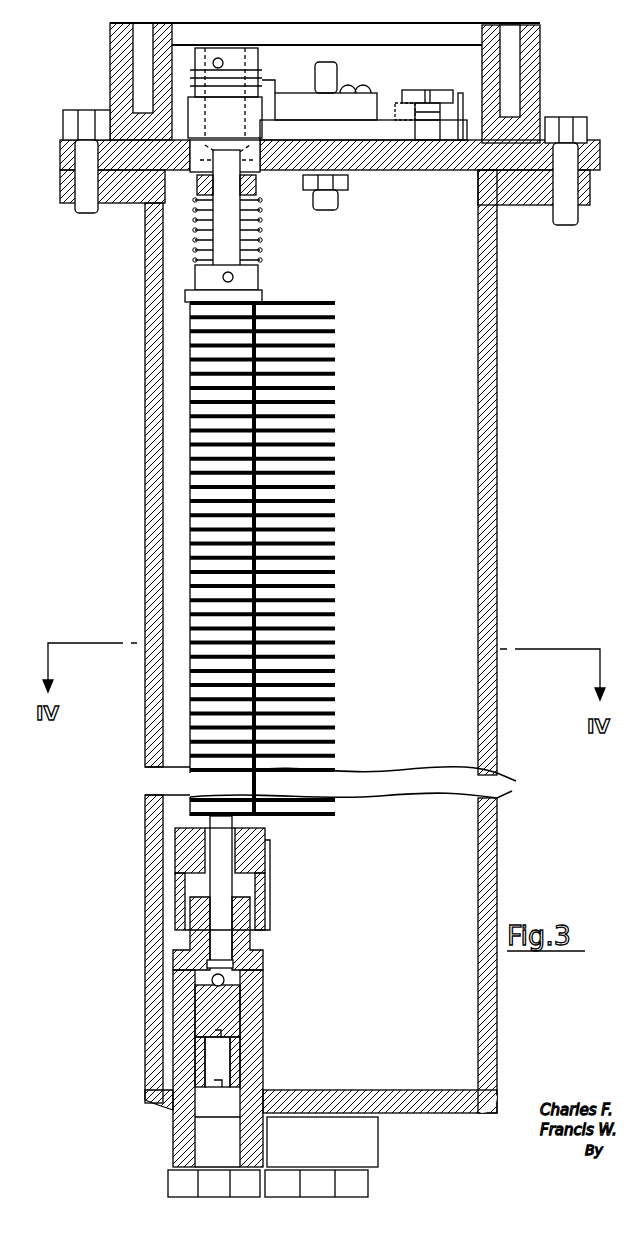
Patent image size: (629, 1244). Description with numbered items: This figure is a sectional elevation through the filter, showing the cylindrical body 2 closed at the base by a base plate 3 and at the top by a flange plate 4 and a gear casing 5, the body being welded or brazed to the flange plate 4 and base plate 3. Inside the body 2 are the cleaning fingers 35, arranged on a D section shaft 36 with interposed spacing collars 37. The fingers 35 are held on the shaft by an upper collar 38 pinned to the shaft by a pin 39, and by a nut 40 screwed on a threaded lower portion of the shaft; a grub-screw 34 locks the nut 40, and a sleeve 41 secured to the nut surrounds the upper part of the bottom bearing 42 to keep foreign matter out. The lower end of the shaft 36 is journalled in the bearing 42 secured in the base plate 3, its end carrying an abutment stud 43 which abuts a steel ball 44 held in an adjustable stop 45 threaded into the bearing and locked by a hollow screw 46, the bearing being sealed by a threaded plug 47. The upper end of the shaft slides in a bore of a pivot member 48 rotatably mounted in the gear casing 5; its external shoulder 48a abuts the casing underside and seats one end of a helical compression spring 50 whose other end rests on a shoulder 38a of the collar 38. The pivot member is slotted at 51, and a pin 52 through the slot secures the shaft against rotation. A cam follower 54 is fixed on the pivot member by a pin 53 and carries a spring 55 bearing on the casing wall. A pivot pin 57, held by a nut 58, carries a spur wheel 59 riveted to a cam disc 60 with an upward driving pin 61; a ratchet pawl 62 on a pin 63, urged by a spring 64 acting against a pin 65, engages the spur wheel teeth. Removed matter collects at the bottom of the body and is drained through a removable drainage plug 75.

The cylindrical body 2 is at (336, 641).
The base plate 3 is at (440, 1115).
The flange plate 4 is at (533, 205).
The gear casing 5 is at (540, 78).
The grub-screw 34 is at (178, 843).
The cleaning fingers 35 is at (335, 545).
The D section shaft 36 is at (215, 888).
The spacing collars 37 is at (200, 507).
The upper collar 38 is at (195, 298).
The shoulder 38a is at (200, 275).
The pin 39 is at (260, 278).
The nut 40 is at (268, 880).
The sleeve 41 is at (268, 912).
The bottom bearing 42 is at (195, 917).
The abutment stud 43 is at (240, 967).
The steel ball 44 is at (212, 983).
The adjustable stop 45 is at (230, 1015).
The hollow screw 46 is at (215, 1060).
The threaded plug 47 is at (220, 1143).
The pivot member 48 is at (80, 165).
The external shoulder 48a is at (268, 183).
The helical compression spring 50 is at (265, 240).
The axial slot 51 is at (205, 200).
The pin 52 is at (205, 218).
The pin 53 is at (215, 65).
The cam follower 54 is at (200, 110).
The spring 55 is at (265, 82).
The pivot pin 57 is at (340, 200).
The nut 58 is at (335, 172).
The spur wheel 59 is at (368, 140).
The cam disc 60 is at (297, 100).
The driving pin 61 is at (336, 72).
The ratchet pawl 62 is at (440, 132).
The pin 63 is at (430, 92).
The spring 64 is at (470, 140).
The pin 65 is at (397, 118).
The drainage plug 75 is at (355, 1187).